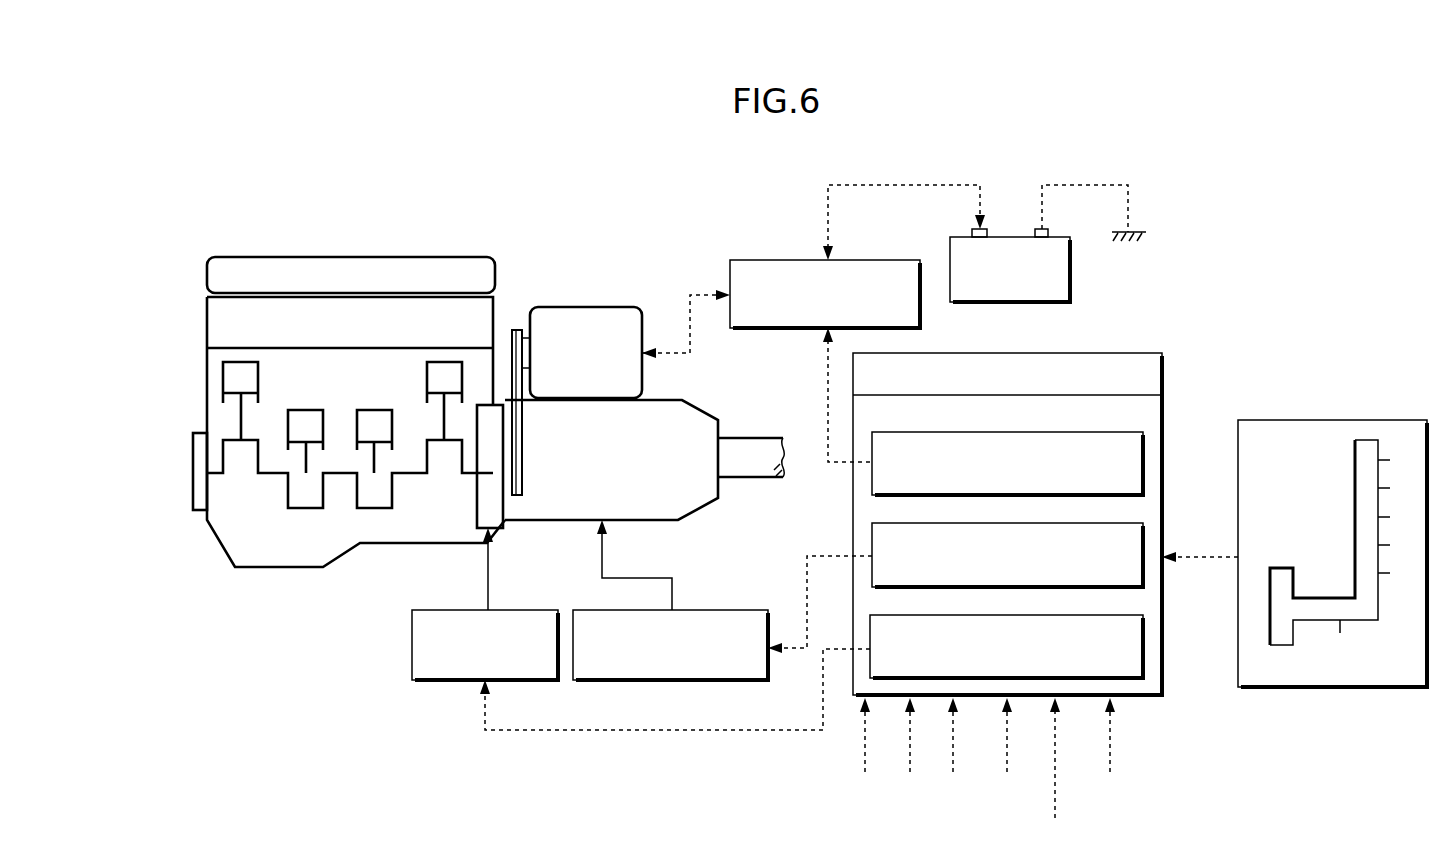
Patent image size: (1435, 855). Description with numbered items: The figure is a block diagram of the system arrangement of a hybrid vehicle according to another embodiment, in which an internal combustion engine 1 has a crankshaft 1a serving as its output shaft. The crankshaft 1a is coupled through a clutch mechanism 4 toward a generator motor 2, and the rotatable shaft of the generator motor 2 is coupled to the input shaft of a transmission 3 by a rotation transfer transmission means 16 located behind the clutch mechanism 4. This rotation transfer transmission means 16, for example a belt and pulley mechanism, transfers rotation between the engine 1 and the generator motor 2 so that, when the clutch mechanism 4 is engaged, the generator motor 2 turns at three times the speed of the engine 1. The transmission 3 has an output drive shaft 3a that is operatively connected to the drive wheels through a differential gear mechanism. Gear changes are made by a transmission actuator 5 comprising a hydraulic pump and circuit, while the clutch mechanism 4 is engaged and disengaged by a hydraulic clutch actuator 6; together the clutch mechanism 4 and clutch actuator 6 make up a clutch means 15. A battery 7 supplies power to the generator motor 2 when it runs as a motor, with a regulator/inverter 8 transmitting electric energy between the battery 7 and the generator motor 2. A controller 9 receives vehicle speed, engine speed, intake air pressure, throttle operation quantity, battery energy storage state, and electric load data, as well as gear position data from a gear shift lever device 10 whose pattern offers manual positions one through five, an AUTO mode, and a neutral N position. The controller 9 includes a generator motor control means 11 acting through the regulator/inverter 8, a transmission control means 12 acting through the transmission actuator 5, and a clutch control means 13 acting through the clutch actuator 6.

The internal combustion engine 1 is at (200, 403).
The crankshaft 1a is at (410, 473).
The generator motor 2 is at (593, 307).
The transmission 3 is at (665, 400).
The output drive shaft 3a is at (748, 438).
The clutch mechanism 4 is at (488, 494).
The clutch means 15 is at (459, 500).
The transmission actuator 5 is at (710, 610).
The clutch actuator 6 is at (507, 610).
The battery 7 is at (1060, 237).
The regulator/inverter 8 is at (858, 260).
The controller 9 is at (888, 586).
The gear shift lever device 10 is at (1340, 420).
The generator motor control means 11 is at (1047, 432).
The transmission control means 12 is at (1047, 523).
The clutch control means 13 is at (1047, 615).
The rotation transfer transmission means 16 is at (530, 451).